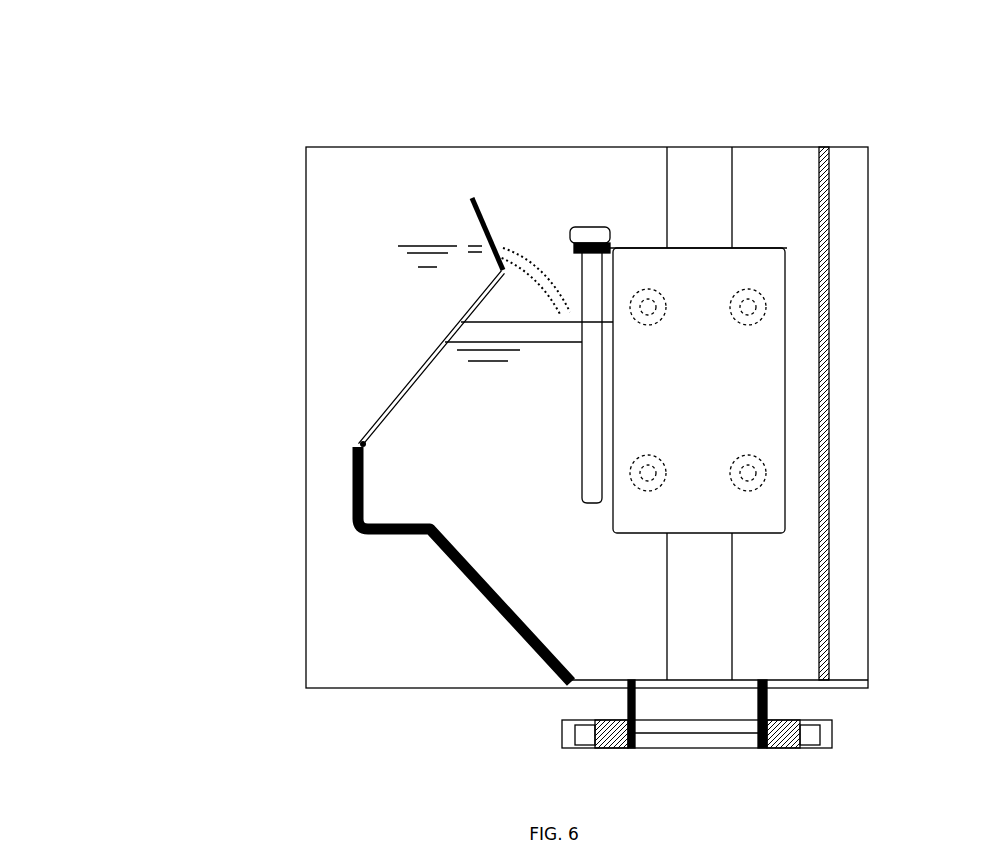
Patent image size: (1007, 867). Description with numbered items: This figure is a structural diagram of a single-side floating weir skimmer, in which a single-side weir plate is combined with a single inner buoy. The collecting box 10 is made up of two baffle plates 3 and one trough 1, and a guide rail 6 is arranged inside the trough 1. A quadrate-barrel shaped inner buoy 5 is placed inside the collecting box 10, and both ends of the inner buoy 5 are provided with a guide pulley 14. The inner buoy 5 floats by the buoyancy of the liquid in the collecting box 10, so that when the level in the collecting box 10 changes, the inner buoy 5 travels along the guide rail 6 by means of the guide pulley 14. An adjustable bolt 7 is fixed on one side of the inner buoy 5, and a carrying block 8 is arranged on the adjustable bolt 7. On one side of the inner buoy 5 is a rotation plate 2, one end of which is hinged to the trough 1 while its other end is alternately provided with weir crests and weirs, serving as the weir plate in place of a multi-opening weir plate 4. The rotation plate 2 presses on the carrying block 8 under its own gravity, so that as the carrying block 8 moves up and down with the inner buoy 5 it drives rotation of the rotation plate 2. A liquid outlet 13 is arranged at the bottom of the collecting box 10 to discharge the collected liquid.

The trough 1 is at (350, 453).
The rotation plate 2 is at (430, 347).
The baffle plate 3 is at (403, 145).
The multi-opening weir plate 4 is at (472, 198).
The inner buoy 5 is at (713, 263).
The guide rail 6 is at (693, 217).
The adjustable bolt 7 is at (597, 217).
The carrying block 8 is at (572, 313).
The collecting box 10 is at (787, 590).
The liquid outlet 13 is at (825, 718).
The guide pulley 14 is at (767, 293).